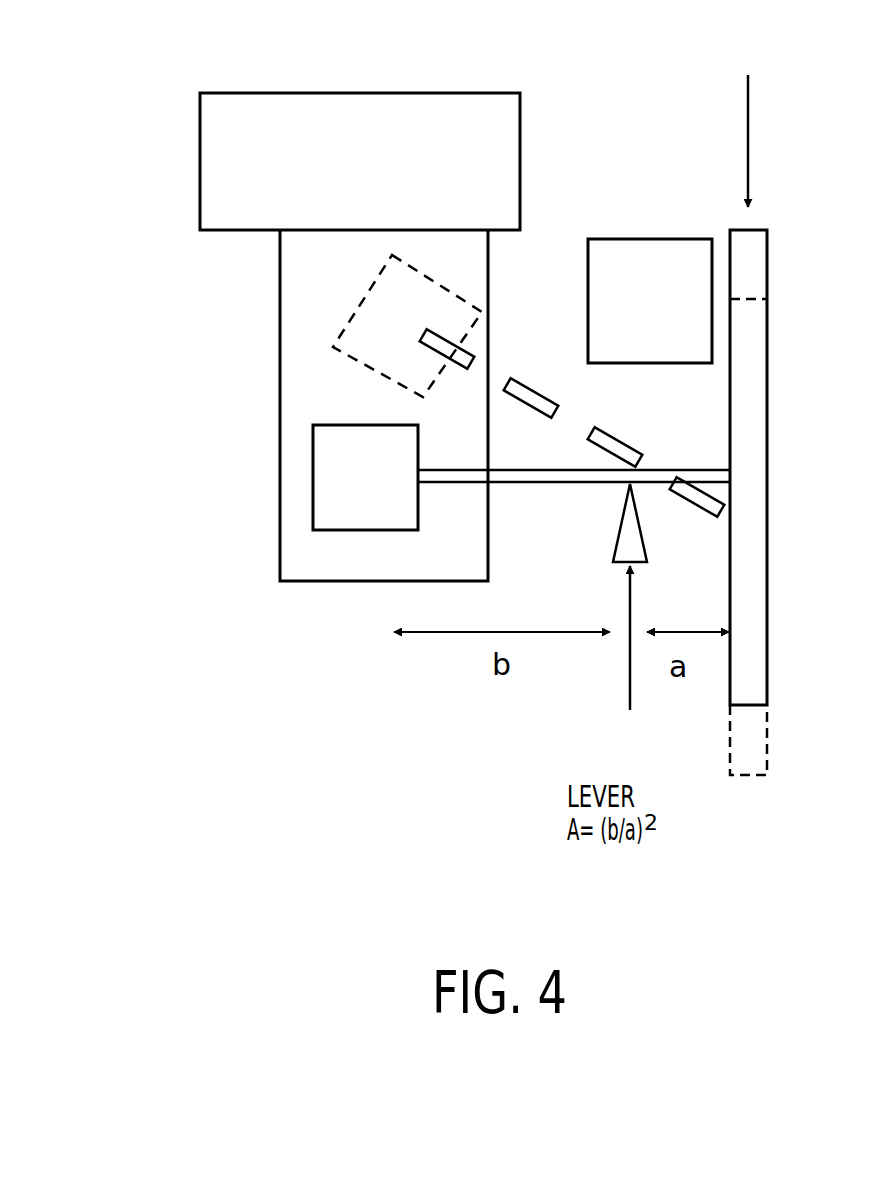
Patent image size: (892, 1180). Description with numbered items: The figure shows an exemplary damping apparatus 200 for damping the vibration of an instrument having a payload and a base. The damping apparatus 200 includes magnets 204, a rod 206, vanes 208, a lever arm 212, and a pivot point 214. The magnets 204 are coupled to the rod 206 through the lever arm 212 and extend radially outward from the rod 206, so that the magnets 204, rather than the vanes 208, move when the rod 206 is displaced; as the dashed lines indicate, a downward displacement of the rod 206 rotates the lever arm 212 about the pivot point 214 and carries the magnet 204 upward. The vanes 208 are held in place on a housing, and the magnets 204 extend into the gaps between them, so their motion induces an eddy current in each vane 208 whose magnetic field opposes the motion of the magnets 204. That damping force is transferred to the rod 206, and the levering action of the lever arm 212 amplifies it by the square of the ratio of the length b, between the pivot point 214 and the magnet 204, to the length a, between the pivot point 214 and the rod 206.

The damping apparatus 200 is at (100, 90).
The magnets 204 is at (343, 485).
The rod 206 is at (748, 495).
The vanes 208 is at (280, 340).
The lever arm 212 is at (572, 485).
The pivot point 214 is at (632, 487).